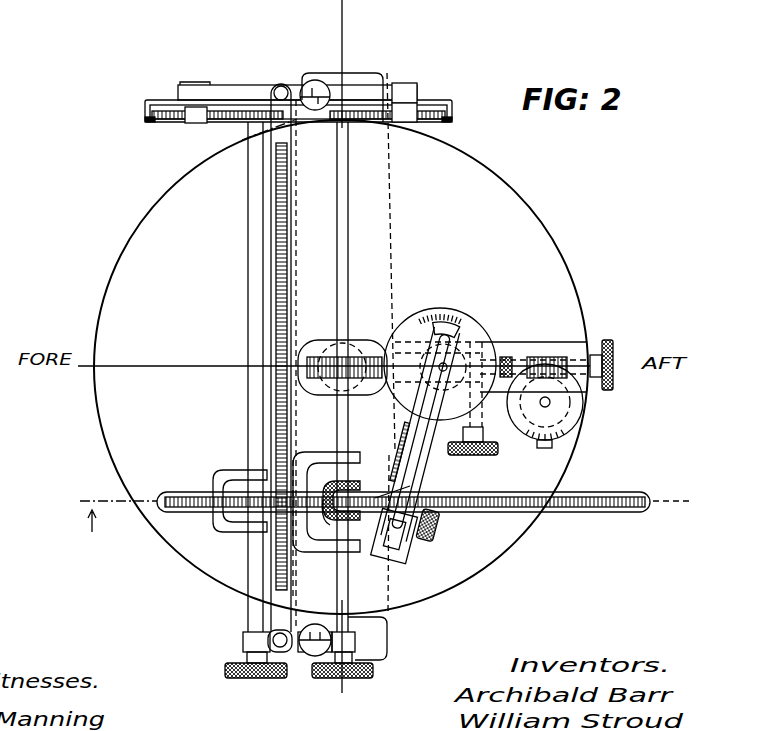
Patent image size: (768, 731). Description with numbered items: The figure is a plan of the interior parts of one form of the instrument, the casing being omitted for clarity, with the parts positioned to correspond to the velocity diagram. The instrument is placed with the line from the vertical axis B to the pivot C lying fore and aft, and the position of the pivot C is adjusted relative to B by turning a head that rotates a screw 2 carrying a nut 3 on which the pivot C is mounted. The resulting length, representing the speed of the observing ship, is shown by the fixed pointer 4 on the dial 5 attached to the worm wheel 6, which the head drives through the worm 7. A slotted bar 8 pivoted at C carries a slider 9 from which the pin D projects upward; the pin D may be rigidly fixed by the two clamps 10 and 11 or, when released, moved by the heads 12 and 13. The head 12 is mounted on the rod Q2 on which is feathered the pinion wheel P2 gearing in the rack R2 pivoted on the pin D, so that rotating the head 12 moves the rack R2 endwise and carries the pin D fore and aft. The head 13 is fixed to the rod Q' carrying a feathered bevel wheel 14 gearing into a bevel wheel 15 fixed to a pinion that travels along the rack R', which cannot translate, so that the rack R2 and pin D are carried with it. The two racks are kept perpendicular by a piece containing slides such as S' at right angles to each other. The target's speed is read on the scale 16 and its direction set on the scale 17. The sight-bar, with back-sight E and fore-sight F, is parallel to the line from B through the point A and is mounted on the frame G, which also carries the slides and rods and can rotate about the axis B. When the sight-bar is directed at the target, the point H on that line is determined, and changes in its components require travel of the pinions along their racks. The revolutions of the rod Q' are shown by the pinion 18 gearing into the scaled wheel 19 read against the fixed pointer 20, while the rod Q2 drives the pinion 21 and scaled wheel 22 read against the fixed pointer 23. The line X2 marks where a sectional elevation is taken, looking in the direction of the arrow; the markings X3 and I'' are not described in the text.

The fore-sight F is at (300, 88).
The frame G is at (372, 80).
The point on line BA H is at (343, 510).
The fixed pointer 23 is at (148, 122).
The wheel with uniform scale 22 is at (195, 122).
The pinion 21 is at (245, 120).
The pinion 18 is at (348, 123).
The wheel with uniform scale 19 is at (425, 122).
The fixed pointer 20 is at (447, 123).
The rack R' is at (238, 366).
The rod Q' is at (369, 344).
The rod Q2 is at (256, 384).
The vertical axis B is at (343, 362).
The nut 3 is at (428, 345).
The scale 17 is at (445, 330).
The pivot C is at (470, 338).
The screw 2 is at (508, 355).
The worm 7 is at (556, 358).
The point on line BA A is at (610, 342).
The worm wheel 6 is at (560, 400).
The dial 5 is at (575, 418).
The fixed pointer 4 is at (548, 447).
The clamp 11 is at (490, 456).
The slotted bar 8 is at (420, 455).
The scale 16 is at (398, 455).
The bevel wheel 14 is at (352, 480).
The clamp I'' is at (326, 483).
The rack R2 is at (230, 507).
The pinion wheel P2 is at (247, 520).
The bevel wheel 15 is at (319, 521).
The pin D is at (392, 505).
The slide S' is at (308, 530).
The clamp 10 is at (436, 530).
The slider 9 is at (405, 550).
The section line X2 is at (102, 508).
The section line X3 is at (687, 500).
The head 12 is at (230, 672).
The head 13 is at (370, 672).
The back-sight E is at (312, 645).